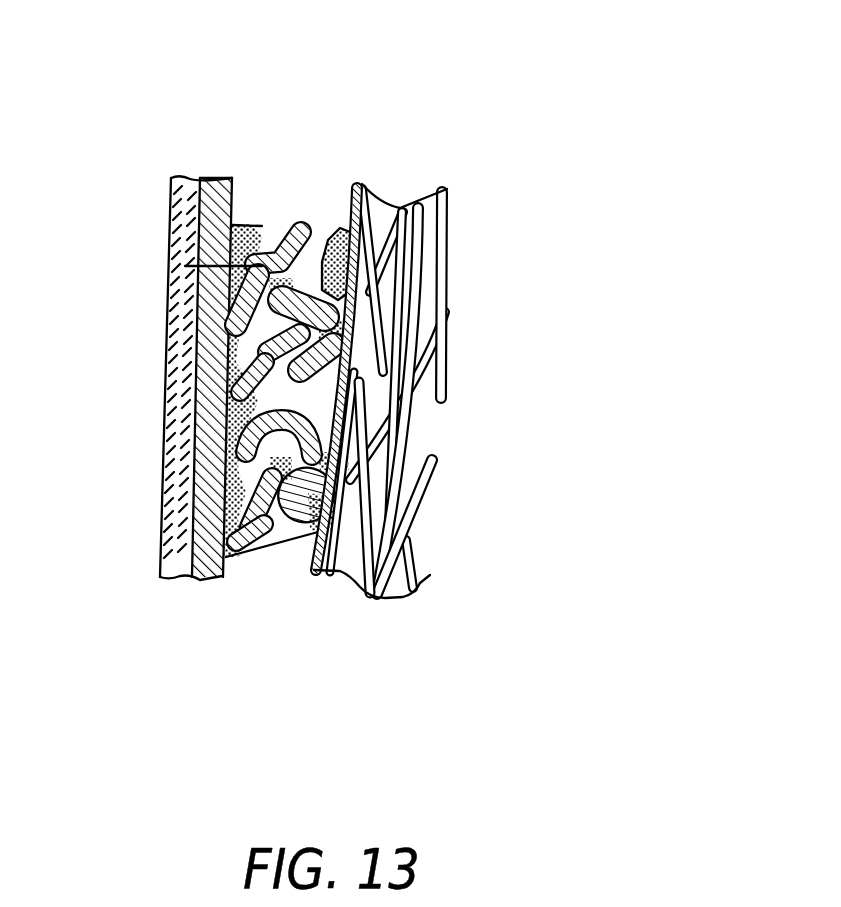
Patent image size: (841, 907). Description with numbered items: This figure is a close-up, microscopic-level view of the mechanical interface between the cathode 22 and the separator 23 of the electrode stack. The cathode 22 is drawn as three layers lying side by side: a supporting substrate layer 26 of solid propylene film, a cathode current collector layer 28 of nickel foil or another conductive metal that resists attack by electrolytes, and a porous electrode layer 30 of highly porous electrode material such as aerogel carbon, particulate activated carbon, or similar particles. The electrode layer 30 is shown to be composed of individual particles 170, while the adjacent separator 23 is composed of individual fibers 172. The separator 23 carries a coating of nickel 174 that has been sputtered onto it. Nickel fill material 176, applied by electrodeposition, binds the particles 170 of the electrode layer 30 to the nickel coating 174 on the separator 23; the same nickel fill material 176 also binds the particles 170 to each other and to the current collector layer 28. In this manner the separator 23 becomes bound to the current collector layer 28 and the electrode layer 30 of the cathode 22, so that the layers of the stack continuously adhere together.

The laminate structure 22 is at (355, 143).
The fibrous layer 23 is at (430, 647).
The backing layer 26 is at (177, 482).
The adhesive layer 28 is at (207, 348).
The particulate layer 30 is at (317, 625).
The interface line 170 is at (185, 266).
The fibers 172 is at (425, 442).
The bonded fiber 174 is at (357, 223).
The binder region 176 is at (347, 270).